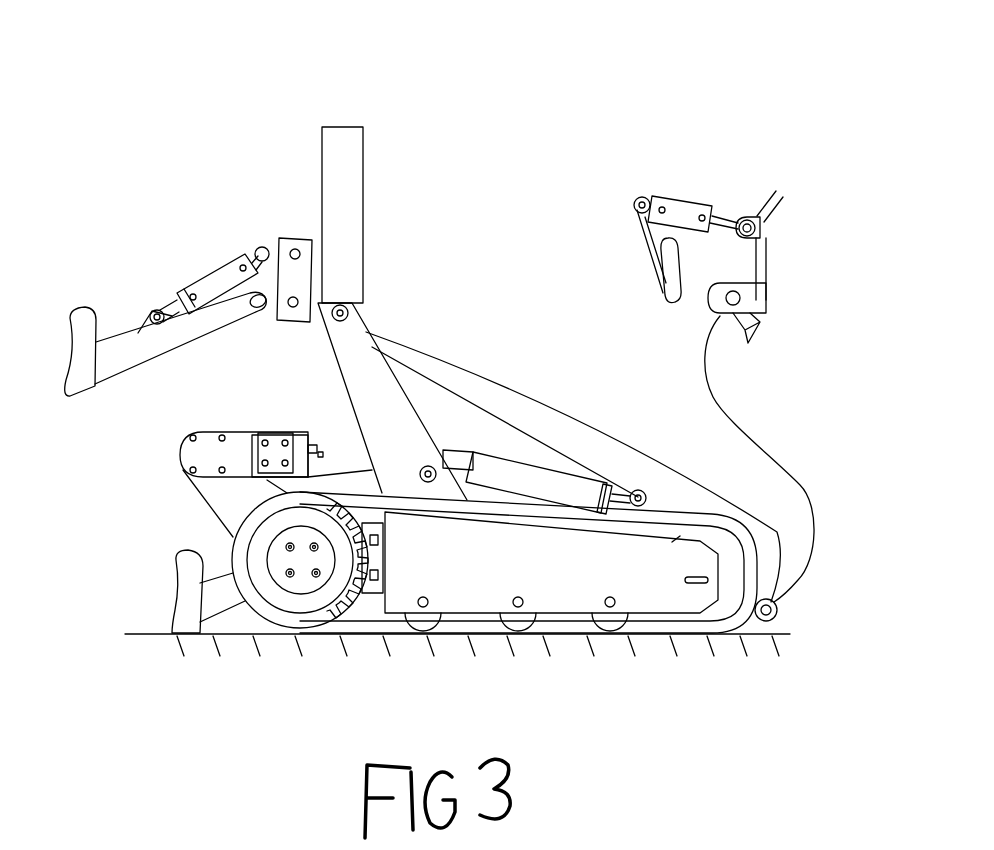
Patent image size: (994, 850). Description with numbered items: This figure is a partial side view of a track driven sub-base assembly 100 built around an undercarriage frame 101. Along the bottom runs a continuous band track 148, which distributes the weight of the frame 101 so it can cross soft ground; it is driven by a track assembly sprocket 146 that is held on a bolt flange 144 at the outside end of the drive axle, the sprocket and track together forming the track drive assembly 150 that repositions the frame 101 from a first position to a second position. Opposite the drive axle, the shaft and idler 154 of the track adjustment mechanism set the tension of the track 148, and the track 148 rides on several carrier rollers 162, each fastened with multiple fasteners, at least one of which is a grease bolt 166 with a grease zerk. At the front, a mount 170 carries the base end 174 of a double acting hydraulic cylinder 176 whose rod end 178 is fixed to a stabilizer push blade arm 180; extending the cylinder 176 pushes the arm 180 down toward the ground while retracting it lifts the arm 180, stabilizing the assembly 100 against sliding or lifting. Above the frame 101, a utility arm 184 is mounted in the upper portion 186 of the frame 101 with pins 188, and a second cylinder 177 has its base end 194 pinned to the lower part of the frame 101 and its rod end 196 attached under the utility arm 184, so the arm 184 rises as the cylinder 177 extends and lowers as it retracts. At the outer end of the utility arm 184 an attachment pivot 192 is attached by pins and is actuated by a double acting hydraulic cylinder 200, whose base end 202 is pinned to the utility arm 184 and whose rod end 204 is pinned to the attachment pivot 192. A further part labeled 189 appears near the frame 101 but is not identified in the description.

The track driven sub-base assembly 100 is at (354, 38).
The undercarriage frame 101 is at (352, 395).
The bolt flange 144 is at (288, 573).
The track assembly sprocket 146 is at (363, 513).
The track 148 is at (233, 542).
The track drive assembly 150 is at (350, 602).
The shaft and idler 154 is at (738, 613).
The carrier rollers 162 is at (628, 618).
The grease bolt 166 is at (520, 603).
The mounts 170 is at (295, 322).
The base end 174 is at (262, 246).
The double acting hydraulic cylinders 176 is at (212, 266).
The cylinders 177 is at (573, 480).
The rod end 178 is at (170, 302).
The stabilizer push blade arms 180 is at (178, 345).
The utility arms 184 is at (492, 370).
The upper portion 186 is at (373, 335).
The pins 188 is at (350, 303).
The bracket 189 is at (372, 470).
The attachment pivot 192 is at (773, 192).
The base end 194 is at (428, 473).
The rod end 196 is at (646, 493).
The double acting hydraulic cylinders 200 is at (683, 197).
The base end 202 is at (637, 202).
The rod end 204 is at (748, 220).